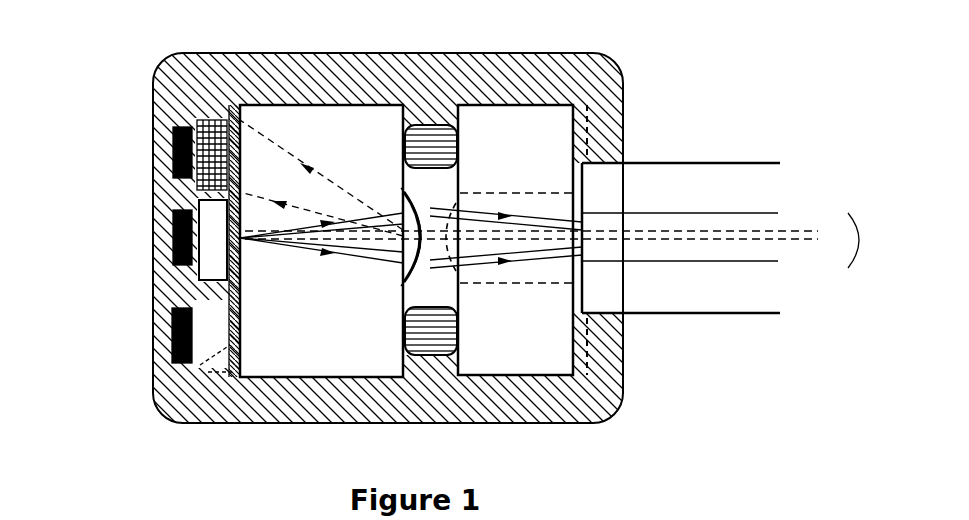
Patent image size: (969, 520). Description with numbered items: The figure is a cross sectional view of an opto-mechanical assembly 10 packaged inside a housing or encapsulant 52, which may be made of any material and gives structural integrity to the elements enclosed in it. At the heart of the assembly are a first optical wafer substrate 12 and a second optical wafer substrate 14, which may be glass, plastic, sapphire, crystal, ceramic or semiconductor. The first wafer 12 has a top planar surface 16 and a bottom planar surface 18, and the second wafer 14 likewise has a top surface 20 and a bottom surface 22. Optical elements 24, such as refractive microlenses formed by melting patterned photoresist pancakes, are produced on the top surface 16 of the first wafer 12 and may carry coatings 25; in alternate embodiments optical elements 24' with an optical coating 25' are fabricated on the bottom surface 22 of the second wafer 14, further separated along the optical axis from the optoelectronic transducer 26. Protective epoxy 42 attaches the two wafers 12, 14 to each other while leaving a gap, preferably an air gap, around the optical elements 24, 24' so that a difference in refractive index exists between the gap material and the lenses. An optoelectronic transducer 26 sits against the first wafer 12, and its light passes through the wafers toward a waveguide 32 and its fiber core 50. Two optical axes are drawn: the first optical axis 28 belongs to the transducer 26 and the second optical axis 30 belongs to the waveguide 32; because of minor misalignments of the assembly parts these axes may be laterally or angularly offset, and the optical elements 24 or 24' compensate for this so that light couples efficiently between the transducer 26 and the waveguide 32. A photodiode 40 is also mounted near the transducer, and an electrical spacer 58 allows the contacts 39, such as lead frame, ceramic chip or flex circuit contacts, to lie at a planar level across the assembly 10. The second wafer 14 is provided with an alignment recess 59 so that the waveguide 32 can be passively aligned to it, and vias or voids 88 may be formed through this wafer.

The opto-mechanical assembly 10 is at (112, 105).
The first optical wafer substrate 12 is at (268, 355).
The second optical wafer substrate 14 is at (560, 118).
The top planar surface 16 is at (450, 300).
The bottom planar surface 18 is at (240, 376).
The top surface 20 is at (577, 350).
The bottom surface 22 is at (442, 362).
The optical elements 24 is at (411, 123).
The coatings 25 is at (433, 136).
The optical elements 24' is at (324, 296).
The optical coating 25' is at (327, 331).
The optoelectronic transducer 26 is at (212, 205).
The first optical axis 28 is at (778, 229).
The second optical axis 30 is at (757, 238).
The waveguide 32 is at (737, 313).
The contacts 39 is at (175, 156).
The photodiode 40 is at (205, 122).
The protective epoxy 42 is at (422, 130).
The fiber core 50 is at (876, 240).
The housing or encapsulant 52 is at (252, 80).
The electrical spacer 58 is at (215, 352).
The alignment recess 59 is at (580, 320).
The vias or voids 88 is at (528, 195).